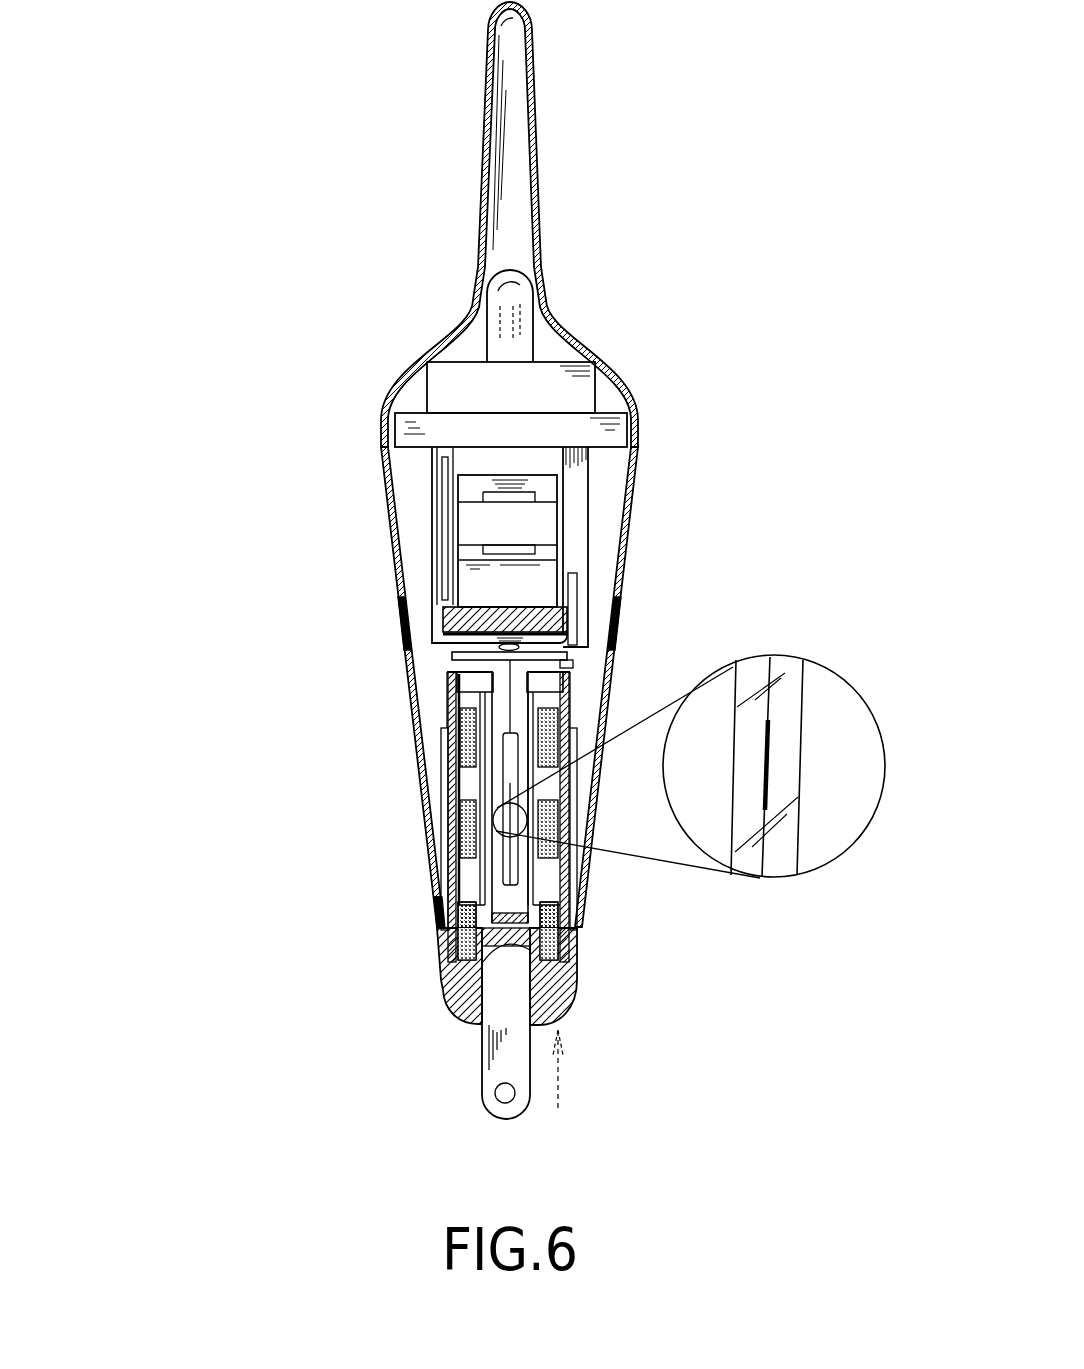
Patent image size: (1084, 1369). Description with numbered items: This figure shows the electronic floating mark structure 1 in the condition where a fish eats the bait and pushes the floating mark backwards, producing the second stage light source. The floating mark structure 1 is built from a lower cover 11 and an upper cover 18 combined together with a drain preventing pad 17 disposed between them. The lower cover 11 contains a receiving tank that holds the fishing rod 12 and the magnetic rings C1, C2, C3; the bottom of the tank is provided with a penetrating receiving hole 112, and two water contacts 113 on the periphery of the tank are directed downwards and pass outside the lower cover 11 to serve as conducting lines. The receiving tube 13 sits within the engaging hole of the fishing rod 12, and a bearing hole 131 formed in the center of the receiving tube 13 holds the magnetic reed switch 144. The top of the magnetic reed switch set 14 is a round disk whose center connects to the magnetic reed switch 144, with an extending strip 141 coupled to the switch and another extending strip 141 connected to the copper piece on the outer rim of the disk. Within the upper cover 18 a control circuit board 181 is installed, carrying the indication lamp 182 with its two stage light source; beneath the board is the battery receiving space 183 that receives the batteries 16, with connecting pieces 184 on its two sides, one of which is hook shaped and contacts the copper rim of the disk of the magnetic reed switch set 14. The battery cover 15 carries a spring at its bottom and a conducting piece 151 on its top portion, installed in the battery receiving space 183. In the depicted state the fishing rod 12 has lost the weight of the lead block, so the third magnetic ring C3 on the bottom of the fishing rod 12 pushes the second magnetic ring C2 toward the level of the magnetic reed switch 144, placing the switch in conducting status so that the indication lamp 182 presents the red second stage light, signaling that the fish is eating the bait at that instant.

The floating mark structure 1 is at (152, 836).
The lower cover 11 is at (412, 748).
The receiving hole 112 is at (485, 1025).
The water contacts 113 is at (433, 927).
The fishing rod 12 is at (525, 1098).
The receiving tube 13 is at (580, 887).
The bearing hole 131 is at (568, 680).
The magnetic reed switch set 14 is at (872, 668).
The extending strip 141 is at (448, 675).
The magnetic reed switch 144 is at (790, 768).
The battery cover 15 is at (530, 600).
The conducting piece 151 is at (480, 607).
The batteries 16 is at (473, 530).
The drain preventing pad 17 is at (592, 612).
The upper cover 18 is at (588, 340).
The control circuit board 181 is at (441, 380).
The indication lamp 182 is at (519, 283).
The battery receiving space 183 is at (550, 490).
The connecting pieces 184 is at (442, 490).
The first magnetic ring C1 is at (455, 720).
The second magnetic ring C2 is at (455, 833).
The third magnetic ring C3 is at (450, 962).